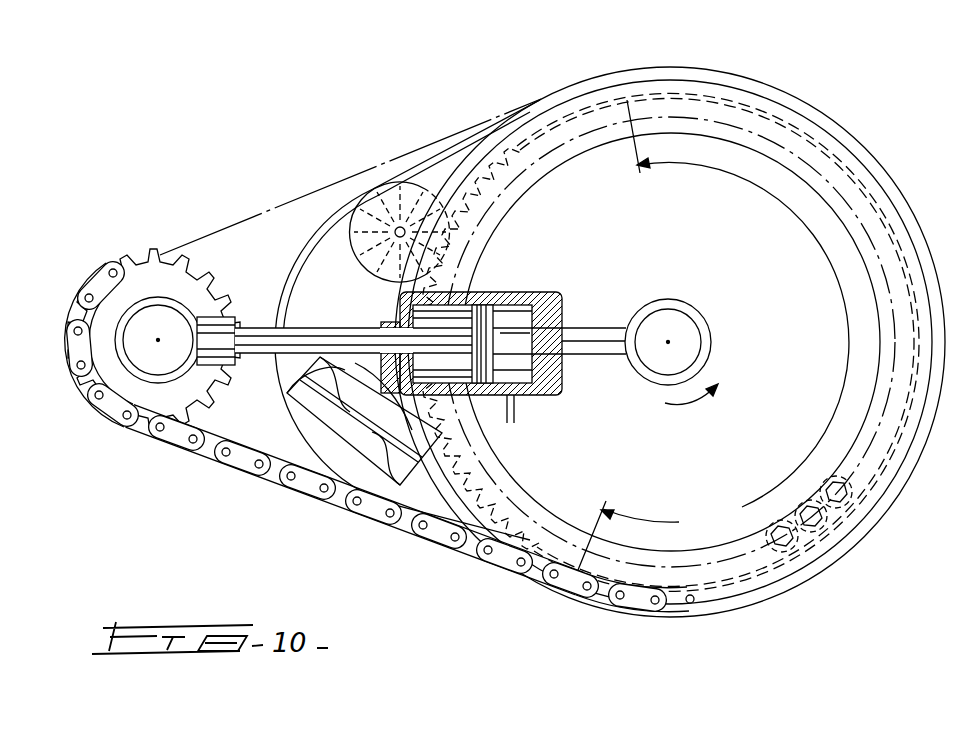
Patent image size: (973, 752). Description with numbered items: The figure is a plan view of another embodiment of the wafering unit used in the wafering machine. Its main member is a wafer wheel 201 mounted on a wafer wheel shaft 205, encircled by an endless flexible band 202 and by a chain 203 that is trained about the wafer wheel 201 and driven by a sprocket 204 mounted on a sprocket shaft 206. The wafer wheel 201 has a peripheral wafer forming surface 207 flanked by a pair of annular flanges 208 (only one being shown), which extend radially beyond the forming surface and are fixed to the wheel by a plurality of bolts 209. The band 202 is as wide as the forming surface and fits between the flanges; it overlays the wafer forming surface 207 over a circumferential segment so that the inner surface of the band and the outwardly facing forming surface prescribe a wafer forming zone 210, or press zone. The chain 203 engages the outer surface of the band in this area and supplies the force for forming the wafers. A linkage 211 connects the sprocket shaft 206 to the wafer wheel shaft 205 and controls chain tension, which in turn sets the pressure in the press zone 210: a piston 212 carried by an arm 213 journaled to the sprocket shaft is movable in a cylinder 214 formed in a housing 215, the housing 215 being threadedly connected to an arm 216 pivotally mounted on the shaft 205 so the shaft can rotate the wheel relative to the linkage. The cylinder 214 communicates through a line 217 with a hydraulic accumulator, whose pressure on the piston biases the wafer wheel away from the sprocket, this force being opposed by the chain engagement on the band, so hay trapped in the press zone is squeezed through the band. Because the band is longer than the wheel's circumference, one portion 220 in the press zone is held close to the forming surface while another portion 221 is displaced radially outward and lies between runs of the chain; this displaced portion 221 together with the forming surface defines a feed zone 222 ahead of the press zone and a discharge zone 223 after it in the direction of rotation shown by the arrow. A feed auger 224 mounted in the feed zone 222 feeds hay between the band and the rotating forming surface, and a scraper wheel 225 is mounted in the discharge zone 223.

The wafer wheel 201 is at (750, 142).
The endless flexible band 202 is at (320, 223).
The chain 203 is at (303, 492).
The sprocket 204 is at (178, 262).
The wafer wheel shaft 205 is at (673, 317).
The sprocket shaft 206 is at (140, 322).
The peripheral wafer forming surface 207 is at (502, 508).
The annular flange 208 is at (825, 543).
The bolt 209 is at (838, 492).
The wafer forming zone 210 is at (713, 335).
The linkage 211 is at (295, 323).
The piston 212 is at (492, 300).
The arm 213 is at (320, 337).
The cylinder 214 is at (545, 292).
The housing 215 is at (558, 408).
The arm 216 is at (607, 333).
The line 217 is at (512, 424).
The band portion 220 is at (683, 90).
The radially displaced band portion 221 is at (275, 302).
The feed zone 222 is at (425, 487).
The discharge zone 223 is at (433, 177).
The feed auger 224 is at (298, 397).
The scraper wheel 225 is at (402, 192).